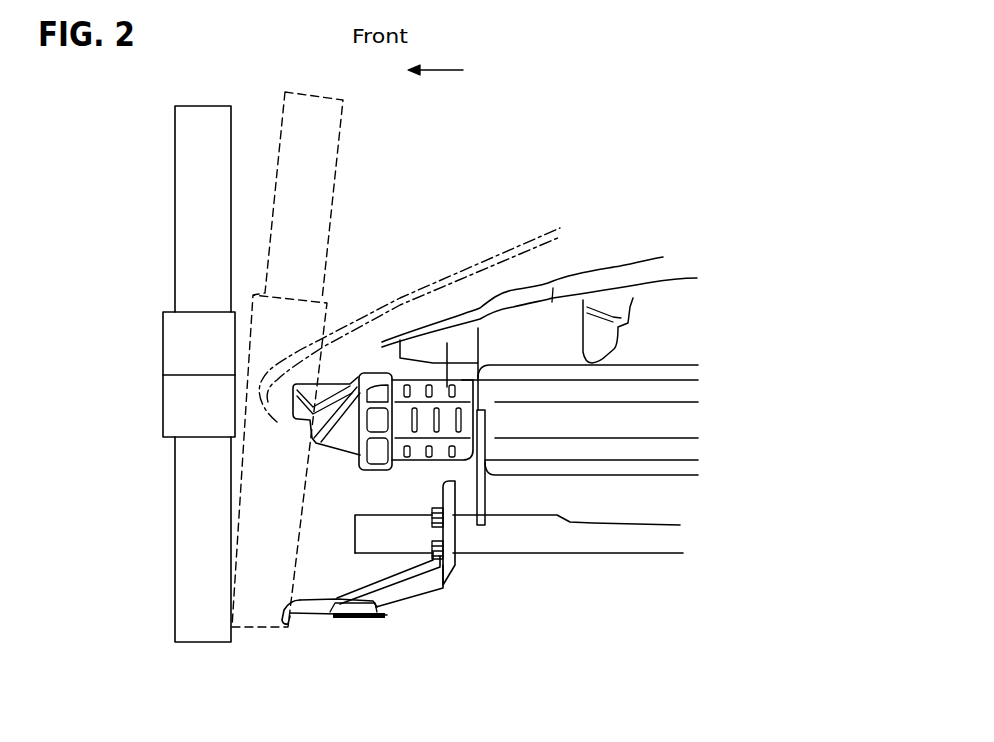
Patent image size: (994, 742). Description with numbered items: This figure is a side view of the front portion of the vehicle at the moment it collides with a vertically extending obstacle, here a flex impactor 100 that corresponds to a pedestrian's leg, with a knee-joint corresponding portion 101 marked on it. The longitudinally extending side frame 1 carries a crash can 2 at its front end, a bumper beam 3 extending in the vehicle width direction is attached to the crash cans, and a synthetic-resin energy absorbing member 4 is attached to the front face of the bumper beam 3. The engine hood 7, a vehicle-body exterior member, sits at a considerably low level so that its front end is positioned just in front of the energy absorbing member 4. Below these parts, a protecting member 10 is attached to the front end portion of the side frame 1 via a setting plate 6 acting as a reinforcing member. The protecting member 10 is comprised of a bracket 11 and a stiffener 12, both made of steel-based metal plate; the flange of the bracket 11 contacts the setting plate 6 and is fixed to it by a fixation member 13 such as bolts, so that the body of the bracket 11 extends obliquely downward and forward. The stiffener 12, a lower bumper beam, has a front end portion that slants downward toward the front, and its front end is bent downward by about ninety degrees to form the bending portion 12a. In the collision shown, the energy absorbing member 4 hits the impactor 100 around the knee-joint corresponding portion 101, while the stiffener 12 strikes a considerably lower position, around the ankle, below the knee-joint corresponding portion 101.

The side frame 1 is at (592, 425).
The crash can 2 is at (437, 392).
The bumper beam 3 is at (383, 373).
The energy absorbing member 4 is at (333, 400).
The setting plate 6 is at (462, 500).
The engine hood 7 is at (525, 240).
The protecting member 10 is at (360, 660).
The bracket 11 is at (402, 600).
The stiffener 12 is at (320, 605).
The bending portion 12a is at (283, 622).
The fixation member 13 is at (432, 548).
The flex impactor 100 is at (207, 120).
The knee-joint corresponding portion 101 is at (287, 362).